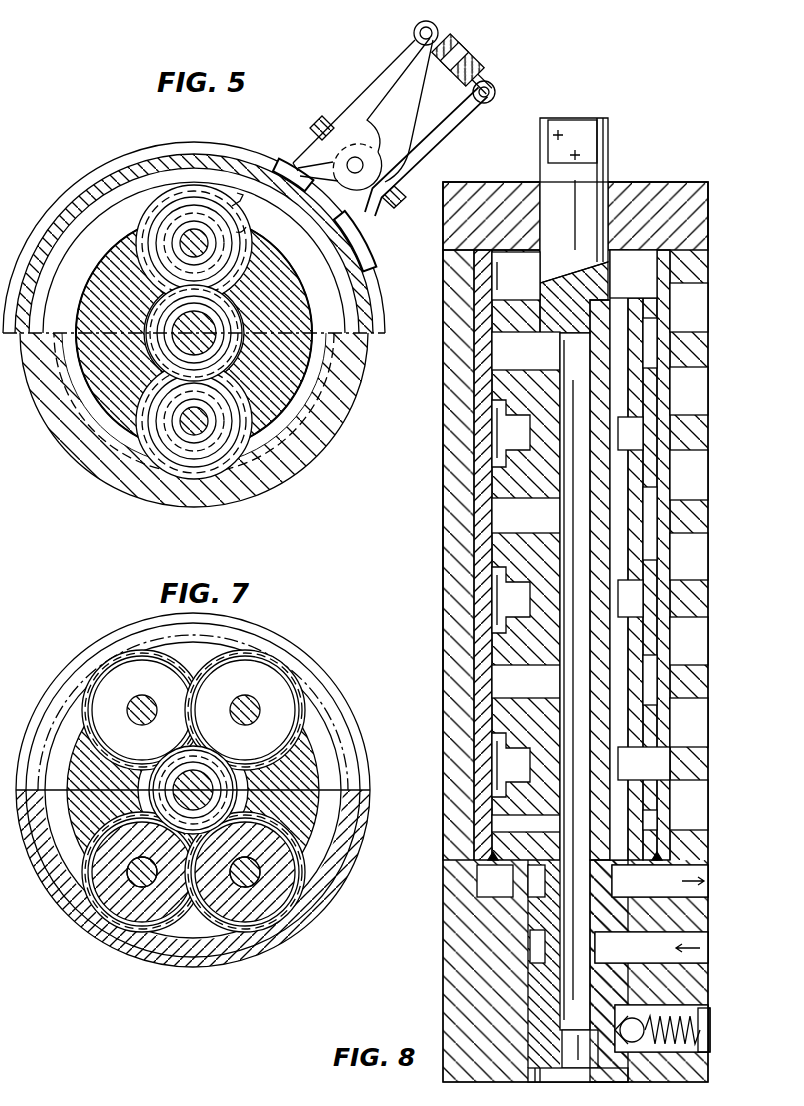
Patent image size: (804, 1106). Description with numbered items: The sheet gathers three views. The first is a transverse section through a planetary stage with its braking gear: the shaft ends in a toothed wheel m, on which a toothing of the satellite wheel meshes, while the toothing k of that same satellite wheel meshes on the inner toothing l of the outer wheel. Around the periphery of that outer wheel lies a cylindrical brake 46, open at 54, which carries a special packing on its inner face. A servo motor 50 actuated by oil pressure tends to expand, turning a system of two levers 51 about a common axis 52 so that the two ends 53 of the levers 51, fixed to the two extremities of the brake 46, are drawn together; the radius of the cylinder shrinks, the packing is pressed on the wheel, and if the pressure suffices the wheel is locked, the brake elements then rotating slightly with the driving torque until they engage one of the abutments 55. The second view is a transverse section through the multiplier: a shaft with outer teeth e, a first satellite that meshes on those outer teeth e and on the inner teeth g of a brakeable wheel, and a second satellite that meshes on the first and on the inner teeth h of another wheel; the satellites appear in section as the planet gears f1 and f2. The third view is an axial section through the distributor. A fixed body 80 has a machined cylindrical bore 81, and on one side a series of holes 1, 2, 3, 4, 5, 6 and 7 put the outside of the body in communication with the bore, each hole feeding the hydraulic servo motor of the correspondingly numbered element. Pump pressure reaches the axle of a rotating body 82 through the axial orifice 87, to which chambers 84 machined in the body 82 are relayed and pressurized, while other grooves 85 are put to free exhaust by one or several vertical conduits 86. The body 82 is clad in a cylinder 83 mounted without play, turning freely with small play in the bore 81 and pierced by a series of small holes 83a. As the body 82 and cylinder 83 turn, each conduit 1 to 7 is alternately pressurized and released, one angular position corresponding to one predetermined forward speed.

In FIG. 5, the pressure intake hole 7 is at (224, 146).
In FIG. 8, the pressure intake hole 7 is at (689, 641).
In FIG. 5, the cylindrical brake 46 is at (116, 172).
In FIG. 5, the servo motor 50 is at (468, 56).
In FIG. 5, the system of two levers 51 is at (443, 122).
In FIG. 5, the common axis 52 is at (368, 156).
In FIG. 5, the lever ends 53 is at (300, 162).
In FIG. 5, the brake opening 54 is at (318, 183).
In FIG. 5, the abutments 55 is at (325, 128).
In FIG. 5, the toothed wheel m is at (290, 275).
In FIG. 5, the inner toothing l is at (312, 462).
In FIG. 5, the toothing k is at (268, 486).
In FIG. 7, the outer teeth e is at (222, 758).
In FIG. 7, the inner teeth g is at (342, 750).
In FIG. 7, the inner teeth h is at (334, 856).
In FIG. 7, the planet gear f1 is at (245, 710).
In FIG. 7, the planet gear f2 is at (142, 710).
In FIG. 8, the fixed body 80 is at (456, 946).
In FIG. 8, the cylindrical bore 81 is at (470, 520).
In FIG. 8, the rotating body 82 is at (508, 560).
In FIG. 8, the cylinder 83 is at (478, 418).
In FIG. 8, the small holes 83a is at (658, 568).
In FIG. 8, the chambers 84 is at (440, 832).
In FIG. 8, the grooves 85 is at (516, 524).
In FIG. 8, the vertical conduits 86 is at (618, 555).
In FIG. 8, the axial orifice 87 is at (578, 707).
In FIG. 8, the pressure intake hole 1 is at (689, 308).
In FIG. 8, the pressure intake hole 2 is at (689, 391).
In FIG. 8, the pressure intake hole 3 is at (689, 558).
In FIG. 8, the pressure intake hole 4 is at (689, 722).
In FIG. 8, the pressure intake hole 5 is at (689, 475).
In FIG. 8, the pressure intake hole 6 is at (689, 806).